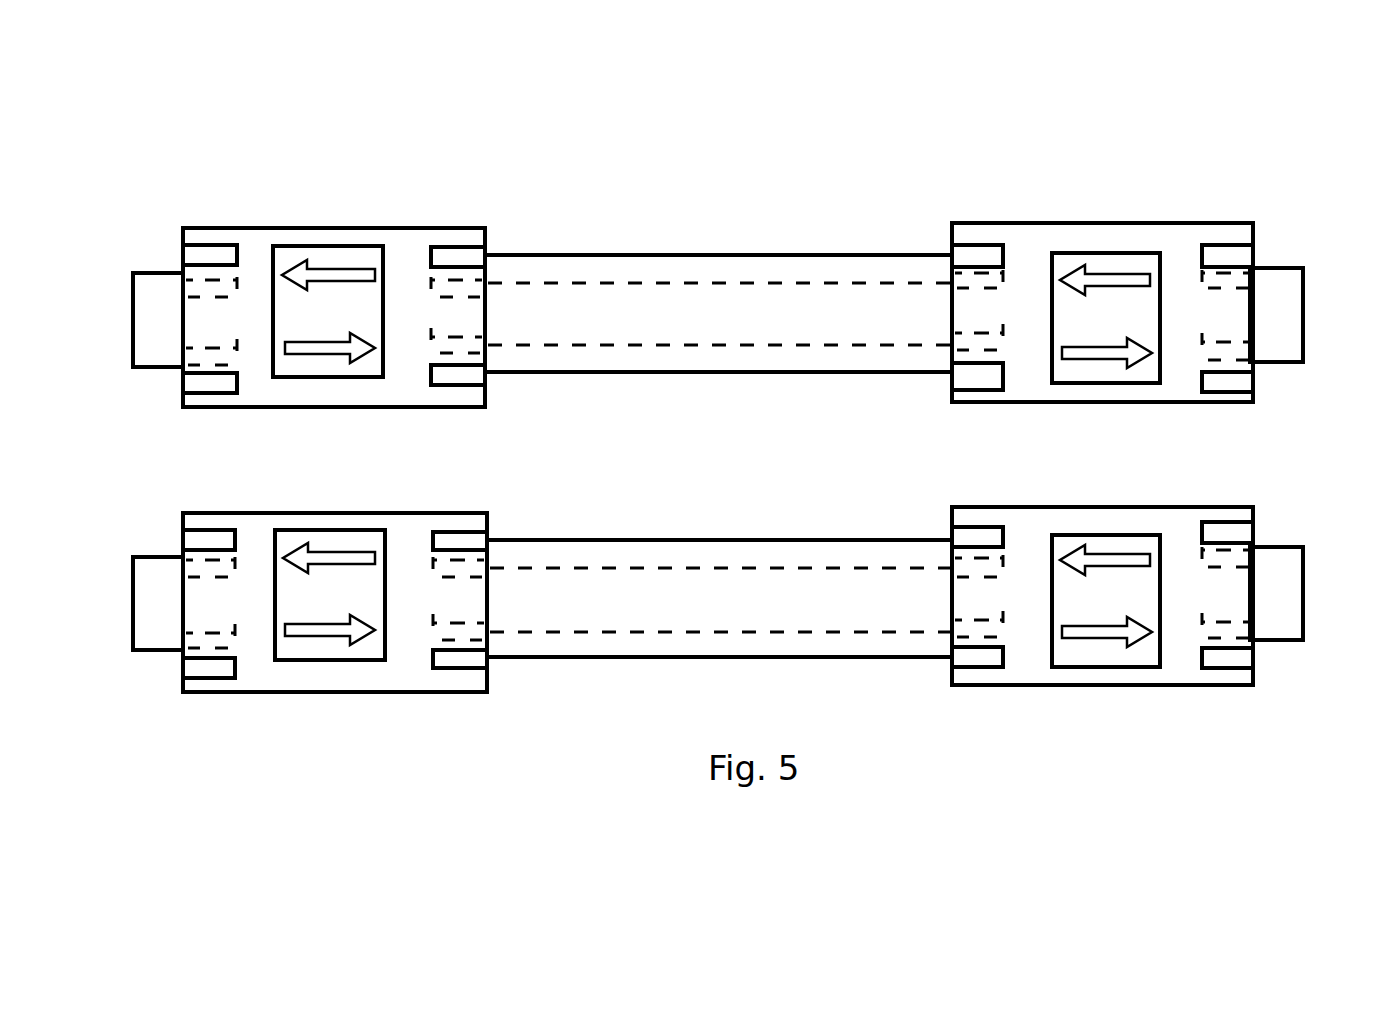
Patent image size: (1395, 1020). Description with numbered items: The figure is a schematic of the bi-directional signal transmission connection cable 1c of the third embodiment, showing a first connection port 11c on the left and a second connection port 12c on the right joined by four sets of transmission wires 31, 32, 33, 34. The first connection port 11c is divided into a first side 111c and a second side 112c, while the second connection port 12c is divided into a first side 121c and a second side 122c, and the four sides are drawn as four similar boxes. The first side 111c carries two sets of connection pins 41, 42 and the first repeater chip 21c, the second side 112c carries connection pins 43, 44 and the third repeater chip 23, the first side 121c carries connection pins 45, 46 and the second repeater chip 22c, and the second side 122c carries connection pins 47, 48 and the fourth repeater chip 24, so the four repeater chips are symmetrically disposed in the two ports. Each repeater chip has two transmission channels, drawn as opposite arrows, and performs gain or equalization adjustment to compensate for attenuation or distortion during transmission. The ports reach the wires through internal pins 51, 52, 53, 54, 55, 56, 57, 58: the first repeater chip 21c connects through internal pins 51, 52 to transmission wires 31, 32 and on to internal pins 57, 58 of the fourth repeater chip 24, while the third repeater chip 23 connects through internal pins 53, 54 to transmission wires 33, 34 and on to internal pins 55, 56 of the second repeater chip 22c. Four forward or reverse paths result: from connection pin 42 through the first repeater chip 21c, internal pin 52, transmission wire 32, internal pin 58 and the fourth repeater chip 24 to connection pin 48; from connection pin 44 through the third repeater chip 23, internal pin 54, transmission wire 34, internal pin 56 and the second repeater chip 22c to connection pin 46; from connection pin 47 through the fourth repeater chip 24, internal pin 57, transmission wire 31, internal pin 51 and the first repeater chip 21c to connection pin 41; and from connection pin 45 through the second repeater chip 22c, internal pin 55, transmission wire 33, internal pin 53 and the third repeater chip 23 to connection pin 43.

The bi-directional signal transmission connection cable 1c is at (92, 107).
The first connection port 11c is at (122, 415).
The first side of the first connection port 111c is at (213, 407).
The second side of the first connection port 112c is at (217, 513).
The second connection port 12c is at (1322, 400).
The first side of the second connection port 121c is at (1225, 507).
The second side of the second connection port 122c is at (1220, 402).
The first repeater chip 21c is at (337, 253).
The second repeater chip 22c is at (1103, 660).
The third repeater chip 23 is at (348, 647).
The fourth repeater chip 24 is at (1122, 263).
The first set of transmission wires 31 is at (587, 283).
The second set of transmission wires 32 is at (825, 347).
The third set of transmission wires 33 is at (602, 568).
The fourth set of transmission wires 34 is at (848, 630).
The connection pin 41 is at (226, 271).
The connection pin 42 is at (226, 366).
The connection pin 43 is at (226, 553).
The connection pin 44 is at (226, 651).
The connection pin 45 is at (1210, 544).
The connection pin 46 is at (1210, 640).
The connection pin 47 is at (1210, 266).
The connection pin 48 is at (1210, 362).
The internal pin 51 is at (441, 272).
The internal pin 52 is at (441, 356).
The internal pin 53 is at (442, 554).
The internal pin 54 is at (442, 641).
The internal pin 55 is at (996, 552).
The internal pin 56 is at (996, 639).
The internal pin 57 is at (995, 267).
The internal pin 58 is at (995, 357).